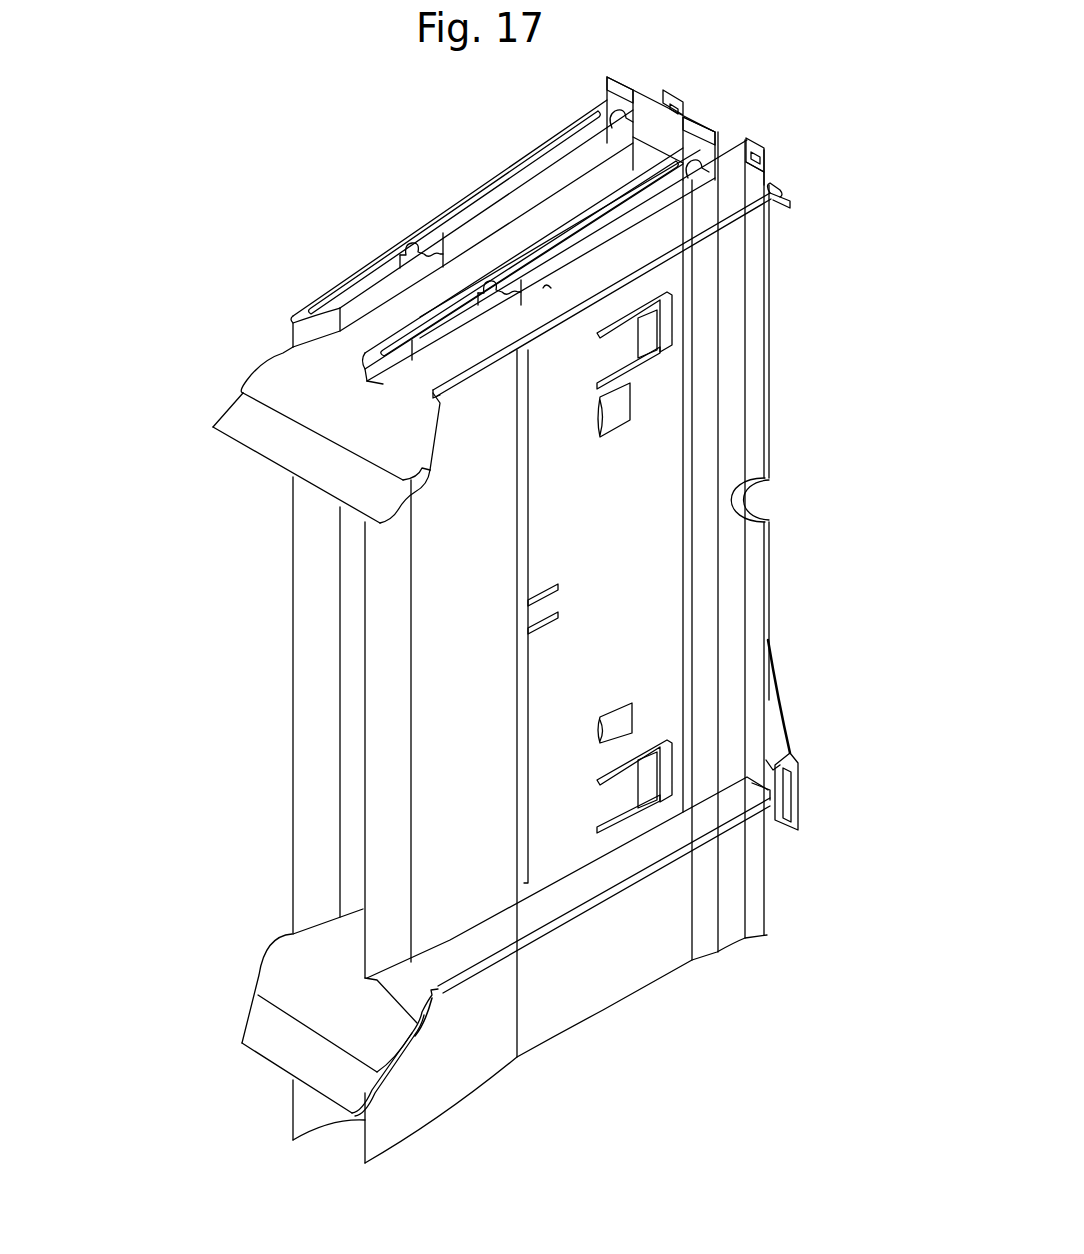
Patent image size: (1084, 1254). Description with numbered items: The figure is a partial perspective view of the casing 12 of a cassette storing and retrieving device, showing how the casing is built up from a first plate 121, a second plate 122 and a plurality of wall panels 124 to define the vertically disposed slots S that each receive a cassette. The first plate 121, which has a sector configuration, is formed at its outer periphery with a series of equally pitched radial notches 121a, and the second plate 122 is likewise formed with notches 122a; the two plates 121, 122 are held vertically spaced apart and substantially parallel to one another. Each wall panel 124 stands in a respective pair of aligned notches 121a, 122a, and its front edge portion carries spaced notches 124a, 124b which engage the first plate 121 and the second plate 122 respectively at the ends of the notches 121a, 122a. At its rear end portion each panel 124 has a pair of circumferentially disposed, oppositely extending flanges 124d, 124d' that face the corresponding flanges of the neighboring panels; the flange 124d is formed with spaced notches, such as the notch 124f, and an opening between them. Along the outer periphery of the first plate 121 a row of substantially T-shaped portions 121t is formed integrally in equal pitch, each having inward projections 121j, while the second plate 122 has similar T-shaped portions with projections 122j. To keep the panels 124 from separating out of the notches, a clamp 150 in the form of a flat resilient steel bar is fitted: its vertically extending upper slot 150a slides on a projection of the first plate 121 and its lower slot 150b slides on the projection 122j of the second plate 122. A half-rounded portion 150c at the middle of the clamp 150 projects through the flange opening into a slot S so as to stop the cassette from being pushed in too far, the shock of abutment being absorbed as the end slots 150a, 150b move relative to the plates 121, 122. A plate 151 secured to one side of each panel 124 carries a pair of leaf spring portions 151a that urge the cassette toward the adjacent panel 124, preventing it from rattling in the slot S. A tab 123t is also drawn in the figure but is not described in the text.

The casing 12 is at (312, 282).
The first plate 121 is at (272, 362).
The radial notch 121a is at (548, 286).
The inward projection 121j is at (780, 198).
The T-shaped portion 121t is at (800, 195).
The second plate 122 is at (283, 940).
The notch 122a is at (527, 940).
The projection 122j is at (800, 795).
The tab of side frame member 123t is at (772, 772).
The wall panel 124 is at (612, 244).
The notch 124a is at (383, 385).
The notch 124b is at (417, 1027).
The flange 124d is at (673, 111).
The flange 124d' is at (772, 124).
The notch 124f is at (752, 785).
The clamp 150 is at (775, 695).
The upper slot 150a is at (758, 160).
The lower slot 150b is at (800, 815).
The half-rounded portion 150c is at (748, 490).
The plate 151 is at (628, 556).
The leaf spring portion 151a is at (647, 340).
The slot S is at (355, 637).